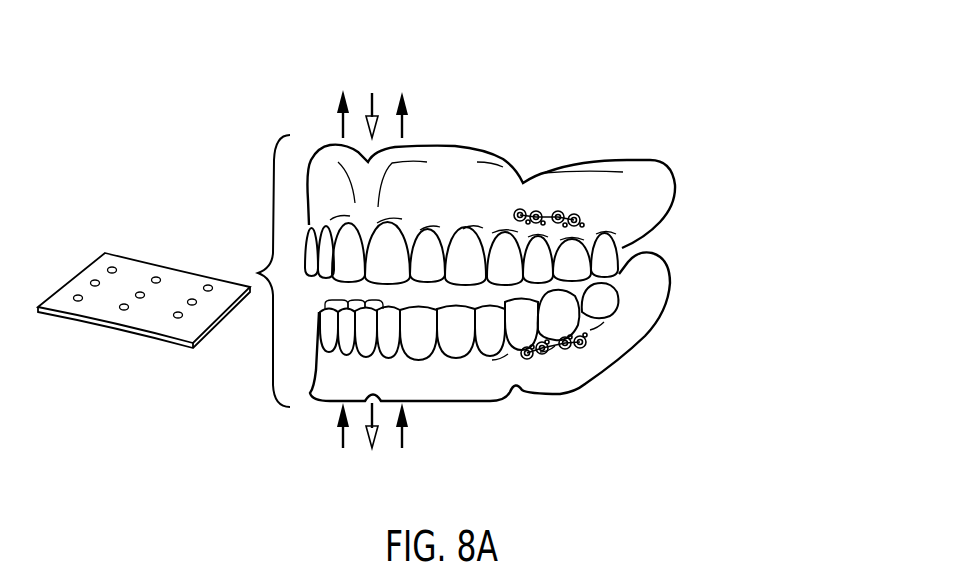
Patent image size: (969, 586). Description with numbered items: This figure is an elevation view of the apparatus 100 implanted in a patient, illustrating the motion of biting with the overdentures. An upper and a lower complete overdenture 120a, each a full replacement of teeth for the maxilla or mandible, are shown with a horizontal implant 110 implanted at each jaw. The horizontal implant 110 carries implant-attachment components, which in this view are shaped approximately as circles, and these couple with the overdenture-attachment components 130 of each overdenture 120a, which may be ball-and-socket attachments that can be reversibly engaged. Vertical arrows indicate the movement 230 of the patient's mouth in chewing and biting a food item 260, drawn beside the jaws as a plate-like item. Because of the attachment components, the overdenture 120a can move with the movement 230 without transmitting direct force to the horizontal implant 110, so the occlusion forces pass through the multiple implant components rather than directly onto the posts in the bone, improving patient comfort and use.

The apparatus 100 is at (258, 273).
The horizontal implant 110 is at (608, 215).
The complete overdenture 120a is at (672, 175).
The overdenture-attachment components 130 is at (611, 337).
The movement 230 is at (345, 95).
The food item 260 is at (117, 328).